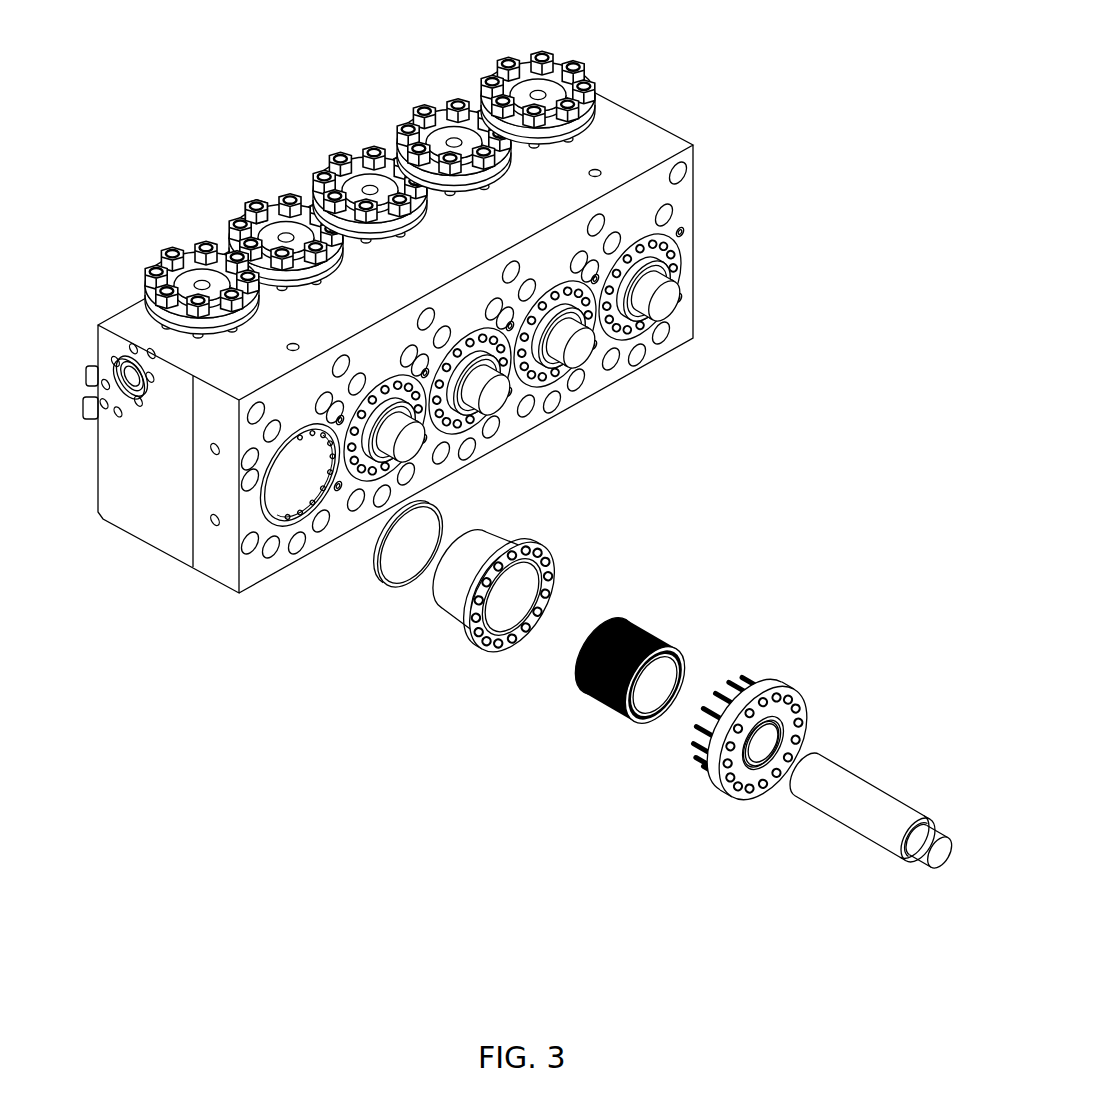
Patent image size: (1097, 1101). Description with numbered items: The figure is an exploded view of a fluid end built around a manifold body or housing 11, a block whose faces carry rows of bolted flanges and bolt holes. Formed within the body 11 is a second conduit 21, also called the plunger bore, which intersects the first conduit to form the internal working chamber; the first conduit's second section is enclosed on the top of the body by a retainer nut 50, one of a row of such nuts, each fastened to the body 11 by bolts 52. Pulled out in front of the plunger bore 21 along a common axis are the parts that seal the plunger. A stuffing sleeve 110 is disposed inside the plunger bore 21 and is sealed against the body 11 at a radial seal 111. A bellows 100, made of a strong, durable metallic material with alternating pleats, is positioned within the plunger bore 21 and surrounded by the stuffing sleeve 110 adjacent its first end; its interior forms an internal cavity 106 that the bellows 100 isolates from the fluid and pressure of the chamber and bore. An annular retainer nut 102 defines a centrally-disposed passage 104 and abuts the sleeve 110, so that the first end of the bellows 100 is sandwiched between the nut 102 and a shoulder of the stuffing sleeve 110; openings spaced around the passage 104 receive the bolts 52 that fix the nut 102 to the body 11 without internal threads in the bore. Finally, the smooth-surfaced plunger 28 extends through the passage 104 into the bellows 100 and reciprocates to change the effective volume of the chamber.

The manifold body 11 is at (620, 101).
The second conduit 21 is at (283, 480).
The plunger 28 is at (880, 800).
The retainer nut 50 is at (147, 313).
The bolts 52 is at (262, 198).
The bellows 100 is at (644, 669).
The annular retainer nut 102 is at (773, 723).
The centrally-disposed passage 104 is at (768, 770).
The internal cavity 106 is at (653, 688).
The stuffing sleeve 110 is at (494, 542).
The radial seal 111 is at (445, 505).